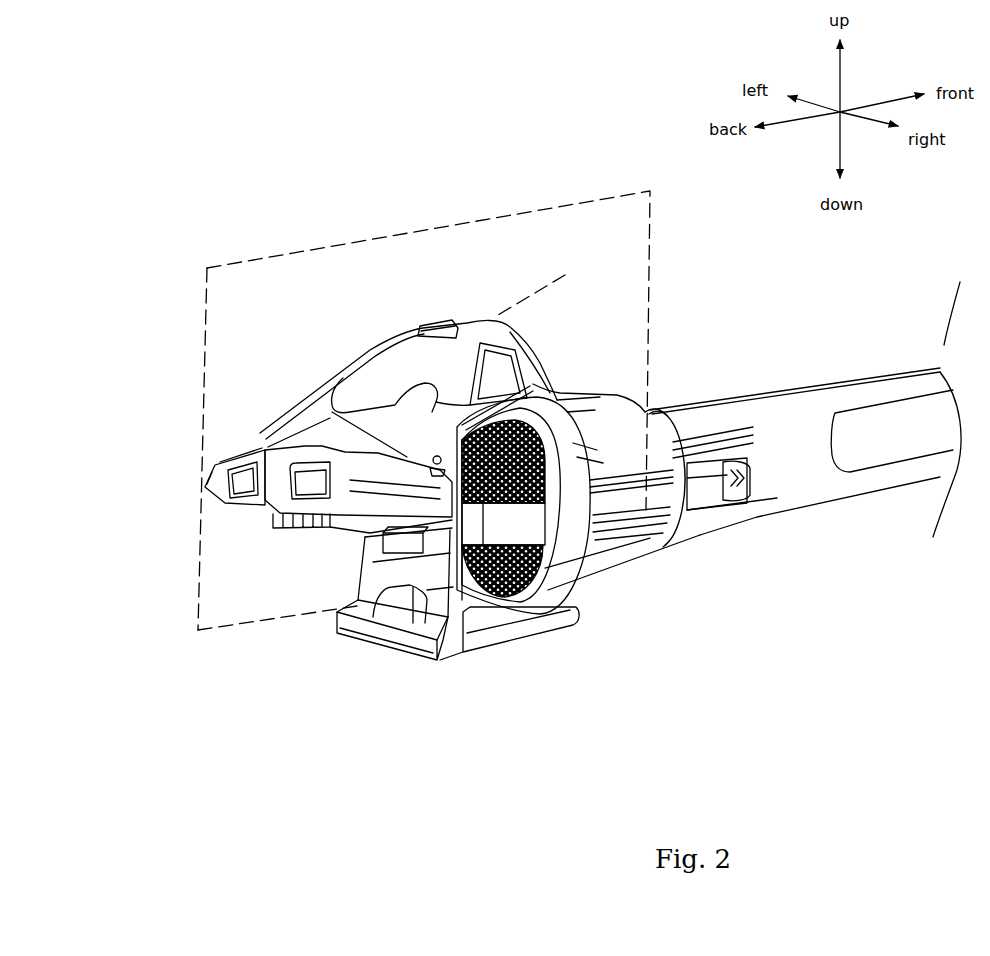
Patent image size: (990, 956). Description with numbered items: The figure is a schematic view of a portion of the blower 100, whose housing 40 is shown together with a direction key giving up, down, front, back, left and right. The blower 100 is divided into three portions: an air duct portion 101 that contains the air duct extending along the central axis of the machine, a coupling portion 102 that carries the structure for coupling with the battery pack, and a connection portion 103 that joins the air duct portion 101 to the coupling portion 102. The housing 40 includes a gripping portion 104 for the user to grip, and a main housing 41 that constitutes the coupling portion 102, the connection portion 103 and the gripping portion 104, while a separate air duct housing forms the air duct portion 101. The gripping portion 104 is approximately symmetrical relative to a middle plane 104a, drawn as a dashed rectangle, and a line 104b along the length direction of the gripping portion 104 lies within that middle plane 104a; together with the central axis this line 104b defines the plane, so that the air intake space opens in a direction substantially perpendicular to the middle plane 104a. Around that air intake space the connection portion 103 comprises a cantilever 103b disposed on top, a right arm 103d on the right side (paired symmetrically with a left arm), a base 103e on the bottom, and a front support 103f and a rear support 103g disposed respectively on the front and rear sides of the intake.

The blower 100 is at (508, 190).
The middle plane 104a is at (215, 278).
The line 104b is at (540, 296).
The gripping portion 104 is at (392, 352).
The main housing 41 is at (265, 438).
The coupling portion 102 is at (337, 531).
The housing 40 is at (678, 330).
The air duct portion 101 is at (880, 388).
The connection portion 103 is at (558, 593).
The cantilever 103b is at (530, 510).
The right arm 103d is at (516, 525).
The base 103e is at (531, 634).
The front support 103f is at (583, 512).
The rear support 103g is at (453, 542).